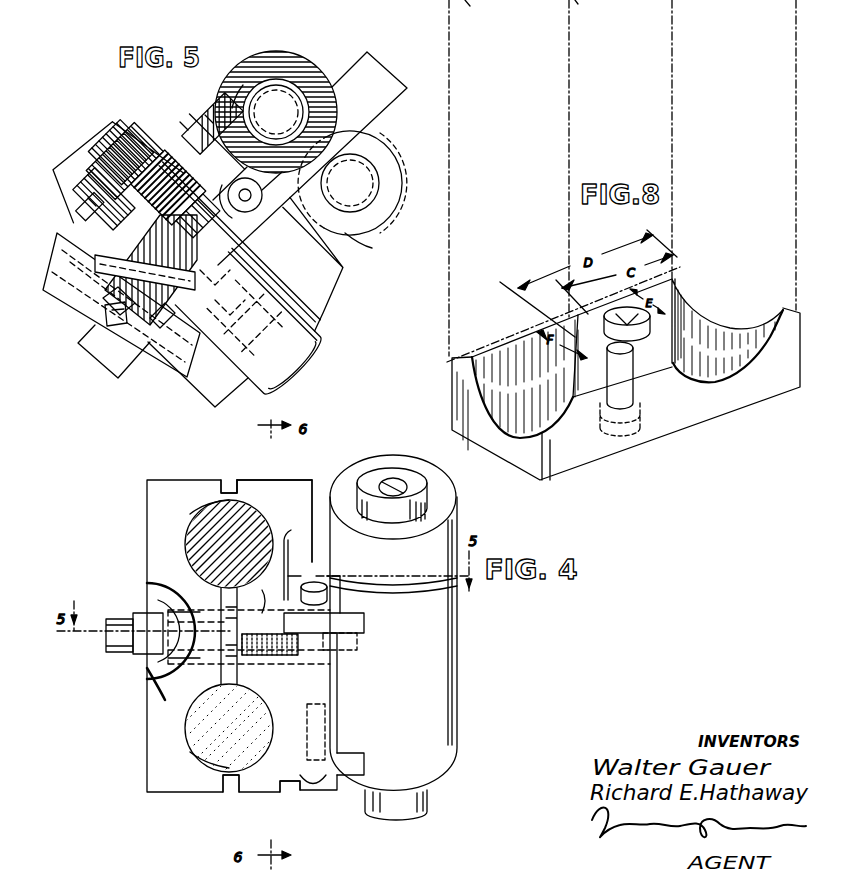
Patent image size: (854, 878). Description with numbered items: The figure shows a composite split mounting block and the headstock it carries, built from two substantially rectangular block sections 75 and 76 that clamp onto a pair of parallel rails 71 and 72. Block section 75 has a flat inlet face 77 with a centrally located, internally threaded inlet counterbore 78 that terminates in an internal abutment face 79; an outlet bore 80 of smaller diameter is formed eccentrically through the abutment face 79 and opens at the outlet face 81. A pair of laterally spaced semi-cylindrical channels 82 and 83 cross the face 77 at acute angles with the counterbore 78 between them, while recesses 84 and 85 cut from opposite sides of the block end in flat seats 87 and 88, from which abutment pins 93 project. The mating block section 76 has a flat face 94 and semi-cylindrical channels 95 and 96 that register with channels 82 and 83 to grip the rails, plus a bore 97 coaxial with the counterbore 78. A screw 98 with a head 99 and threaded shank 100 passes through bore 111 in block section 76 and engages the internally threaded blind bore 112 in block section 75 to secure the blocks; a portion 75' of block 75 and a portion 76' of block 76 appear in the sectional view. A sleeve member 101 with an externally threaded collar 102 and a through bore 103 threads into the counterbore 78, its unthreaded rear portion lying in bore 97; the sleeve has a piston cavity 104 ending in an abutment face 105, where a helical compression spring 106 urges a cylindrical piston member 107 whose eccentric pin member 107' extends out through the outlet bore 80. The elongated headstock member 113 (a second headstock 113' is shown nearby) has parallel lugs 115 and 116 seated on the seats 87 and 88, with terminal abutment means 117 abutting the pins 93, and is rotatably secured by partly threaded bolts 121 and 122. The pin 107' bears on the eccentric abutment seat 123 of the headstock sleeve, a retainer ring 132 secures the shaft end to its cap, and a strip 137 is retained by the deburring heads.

In FIG. 4, the rail 71 is at (197, 542).
In FIG. 4, the rail 72 is at (197, 727).
In FIG. 5, the rail 72 is at (317, 333).
In FIG. 4, the block section 75 is at (274, 468).
In FIG. 5, the block section 75 is at (239, 244).
In FIG. 5, the arm member end 75' is at (267, 218).
In FIG. 4, the block section 76 is at (242, 621).
In FIG. 8, the block section 76 is at (626, 394).
In FIG. 5, the block section 76 is at (137, 294).
In FIG. 5, the housing block portion 76' is at (193, 374).
In FIG. 4, the inlet face 77 is at (236, 491).
In FIG. 8, the inlet face 77 is at (598, 8).
In FIG. 4, the inlet counterbore 78 is at (258, 664).
In FIG. 5, the inlet counterbore 78 is at (180, 120).
In FIG. 4, the internal abutment face 79 is at (346, 659).
In FIG. 5, the internal abutment face 79 is at (195, 115).
In FIG. 5, the outlet bore 80 is at (250, 130).
In FIG. 4, the outlet face 81 is at (339, 690).
In FIG. 4, the semi-cylindrical channel 82 is at (275, 500).
In FIG. 8, the semi-cylindrical channel 82 is at (495, 9).
In FIG. 4, the semi-cylindrical channel 83 is at (262, 775).
In FIG. 4, the recess 84 is at (284, 555).
In FIG. 4, the recess 85 is at (285, 794).
In FIG. 4, the flat seat 87 is at (330, 604).
In FIG. 4, the flat seat 88 is at (334, 773).
In FIG. 4, the abutment pin 93 is at (291, 587).
In FIG. 5, the abutment pin 93 is at (212, 260).
In FIG. 4, the flat face 94 is at (224, 490).
In FIG. 8, the flat face 94 is at (670, 278).
In FIG. 4, the semi-cylindrical channel 95 is at (197, 533).
In FIG. 8, the semi-cylindrical channel 95 is at (520, 377).
In FIG. 4, the semi-cylindrical channel 96 is at (195, 748).
In FIG. 8, the semi-cylindrical channel 96 is at (730, 327).
In FIG. 4, the bore 97 is at (149, 590).
In FIG. 8, the bore 97 is at (625, 308).
In FIG. 5, the bore 97 is at (105, 305).
In FIG. 4, the screw 98 is at (147, 654).
In FIG. 5, the screw 98 is at (158, 322).
In FIG. 4, the head 99 is at (133, 650).
In FIG. 5, the head 99 is at (118, 318).
In FIG. 4, the threaded shank 100 is at (262, 613).
In FIG. 4, the sleeve member 101 is at (200, 682).
In FIG. 5, the sleeve member 101 is at (80, 243).
In FIG. 5, the externally threaded collar 102 is at (90, 202).
In FIG. 5, the bore 103 is at (72, 258).
In FIG. 5, the piston cavity 104 is at (165, 150).
In FIG. 5, the abutment face 105 is at (92, 215).
In FIG. 5, the helical compression spring 106 is at (95, 160).
In FIG. 5, the cylindrical piston member 107 is at (128, 153).
In FIG. 5, the pin member 107' is at (221, 80).
In FIG. 4, the bore 111 is at (181, 597).
In FIG. 8, the bore 111 is at (628, 352).
In FIG. 4, the blind bore 112 is at (275, 652).
In FIG. 5, the headstock member 113 is at (281, 103).
In FIG. 5, the roller 113' is at (366, 178).
In FIG. 4, the lug 115 is at (355, 619).
In FIG. 5, the lug 115 is at (372, 248).
In FIG. 4, the lug 116 is at (364, 760).
In FIG. 5, the terminal abutment means 117 is at (250, 232).
In FIG. 4, the partly threaded bolt 121 is at (323, 576).
In FIG. 5, the partly threaded bolt 121 is at (277, 196).
In FIG. 4, the partly threaded bolt 122 is at (318, 778).
In FIG. 5, the abutment seat 123 is at (243, 85).
In FIG. 4, the retainer ring 132 is at (391, 475).
In FIG. 5, the strip 137 is at (367, 52).